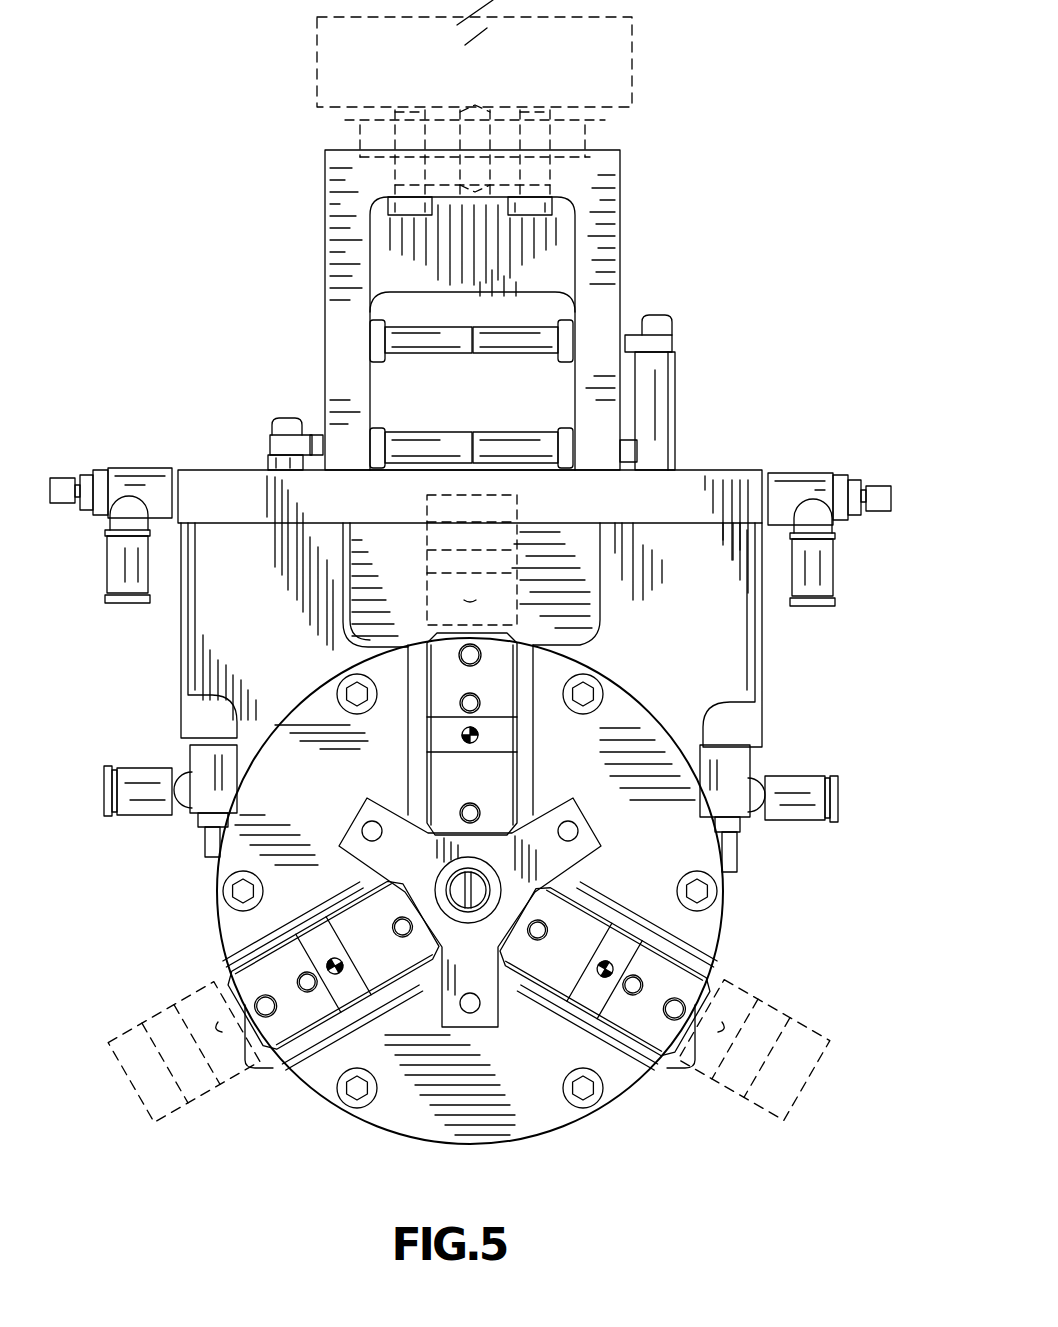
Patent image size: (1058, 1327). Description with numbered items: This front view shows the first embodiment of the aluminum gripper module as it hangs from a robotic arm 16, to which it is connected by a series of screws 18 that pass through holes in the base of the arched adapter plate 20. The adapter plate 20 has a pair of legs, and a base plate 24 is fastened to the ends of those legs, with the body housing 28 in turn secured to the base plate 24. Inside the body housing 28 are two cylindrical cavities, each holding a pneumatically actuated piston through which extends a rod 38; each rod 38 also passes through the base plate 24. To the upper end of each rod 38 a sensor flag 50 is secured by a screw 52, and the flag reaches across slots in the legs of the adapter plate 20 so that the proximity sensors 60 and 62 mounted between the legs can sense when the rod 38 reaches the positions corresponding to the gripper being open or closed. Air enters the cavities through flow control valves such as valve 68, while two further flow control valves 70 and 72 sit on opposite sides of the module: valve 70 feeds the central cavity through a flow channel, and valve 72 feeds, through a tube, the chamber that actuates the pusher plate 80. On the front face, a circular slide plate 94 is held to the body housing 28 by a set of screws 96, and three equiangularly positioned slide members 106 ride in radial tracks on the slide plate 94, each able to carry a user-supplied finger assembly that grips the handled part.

The robotic arm 16 is at (625, 68).
The screws 18 is at (548, 218).
The adapter plate 20 is at (608, 182).
The base plate 24 is at (735, 490).
The body housing 28 is at (750, 680).
The rod 38 is at (672, 414).
The sensor flag 50 is at (662, 345).
The screw 52 is at (652, 322).
The proximity sensor 60 is at (415, 340).
The proximity sensor 62 is at (438, 445).
The flow control valve 68 is at (153, 810).
The flow control valve 70 is at (140, 482).
The flow control valve 72 is at (822, 487).
The pusher plate 80 is at (484, 1010).
The slide plate 94 is at (322, 1070).
The screws 96 is at (592, 1092).
The slide member 106 is at (494, 663).